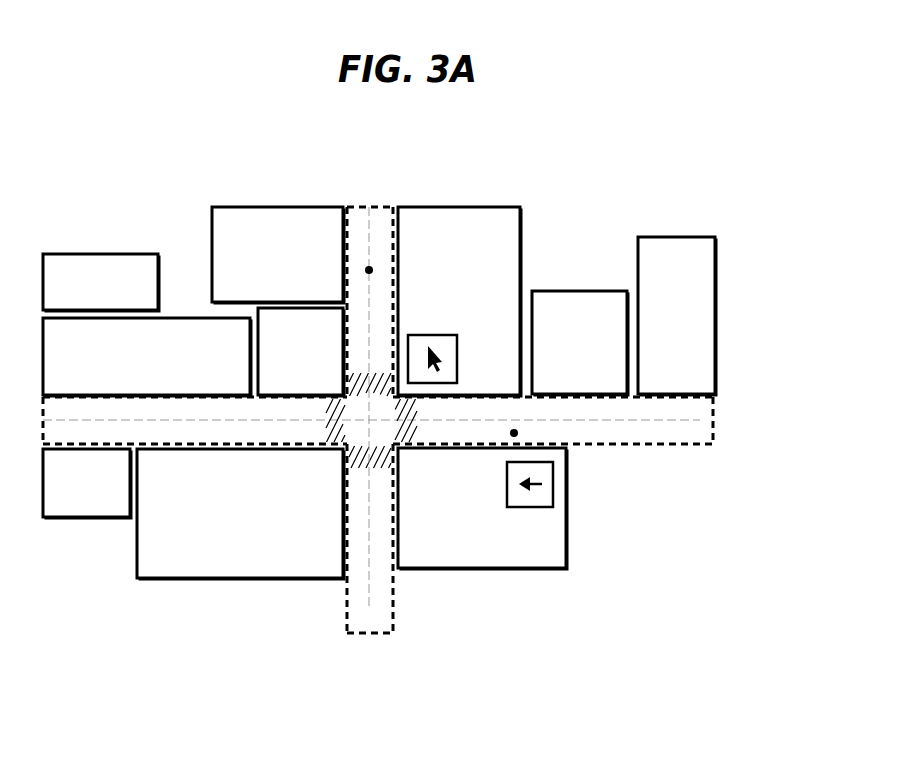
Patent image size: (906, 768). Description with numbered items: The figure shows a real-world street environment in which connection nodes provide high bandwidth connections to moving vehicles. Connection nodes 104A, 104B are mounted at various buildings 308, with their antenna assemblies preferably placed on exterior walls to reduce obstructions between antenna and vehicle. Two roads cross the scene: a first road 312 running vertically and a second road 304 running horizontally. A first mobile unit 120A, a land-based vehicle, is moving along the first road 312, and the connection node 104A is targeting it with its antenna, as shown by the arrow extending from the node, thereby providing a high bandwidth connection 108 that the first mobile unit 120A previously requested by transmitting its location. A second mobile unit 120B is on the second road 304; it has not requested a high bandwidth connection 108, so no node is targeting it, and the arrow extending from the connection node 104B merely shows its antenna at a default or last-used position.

The buildings 308 is at (120, 292).
The second road 304 is at (701, 404).
The first road 312 is at (370, 634).
The high bandwidth connection 108 is at (380, 282).
The first mobile unit 120A is at (408, 335).
The second mobile unit 120B is at (514, 433).
The connection node 104A is at (415, 335).
The connection node 104B is at (528, 508).